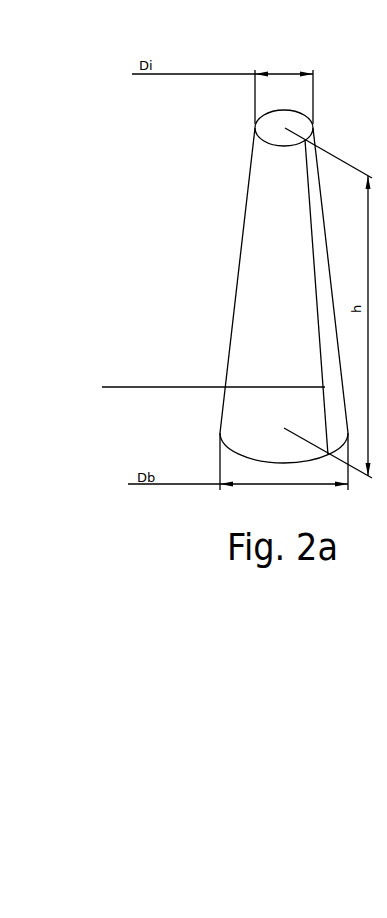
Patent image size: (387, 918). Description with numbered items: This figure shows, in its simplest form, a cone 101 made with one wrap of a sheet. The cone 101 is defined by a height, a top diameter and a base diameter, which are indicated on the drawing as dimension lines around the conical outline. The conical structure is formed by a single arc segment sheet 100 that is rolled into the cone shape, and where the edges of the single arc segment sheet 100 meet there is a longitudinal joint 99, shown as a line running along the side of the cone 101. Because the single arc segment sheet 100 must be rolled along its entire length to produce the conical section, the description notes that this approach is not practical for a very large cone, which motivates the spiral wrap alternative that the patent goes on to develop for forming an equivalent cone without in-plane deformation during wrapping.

The longitudinal joint 99 is at (203, 389).
The single arc segment sheet 100 is at (226, 286).
The cone 101 is at (227, 290).